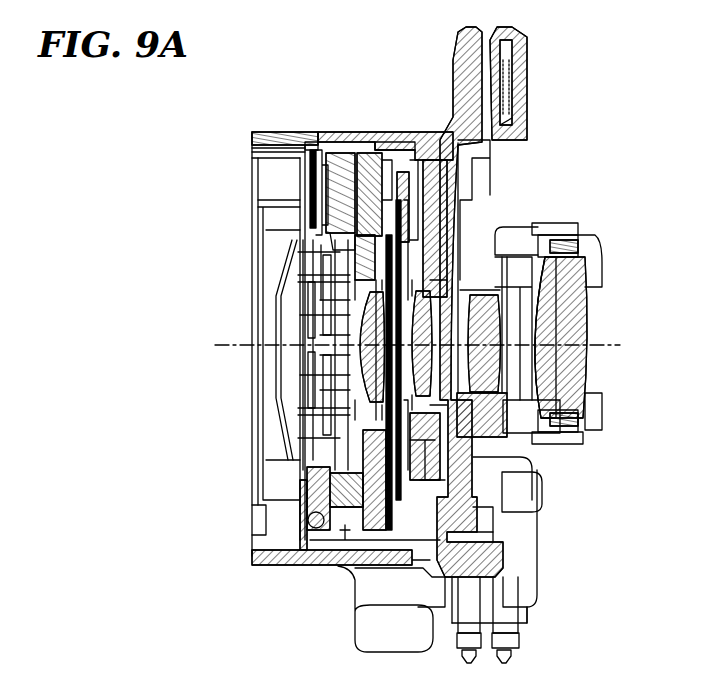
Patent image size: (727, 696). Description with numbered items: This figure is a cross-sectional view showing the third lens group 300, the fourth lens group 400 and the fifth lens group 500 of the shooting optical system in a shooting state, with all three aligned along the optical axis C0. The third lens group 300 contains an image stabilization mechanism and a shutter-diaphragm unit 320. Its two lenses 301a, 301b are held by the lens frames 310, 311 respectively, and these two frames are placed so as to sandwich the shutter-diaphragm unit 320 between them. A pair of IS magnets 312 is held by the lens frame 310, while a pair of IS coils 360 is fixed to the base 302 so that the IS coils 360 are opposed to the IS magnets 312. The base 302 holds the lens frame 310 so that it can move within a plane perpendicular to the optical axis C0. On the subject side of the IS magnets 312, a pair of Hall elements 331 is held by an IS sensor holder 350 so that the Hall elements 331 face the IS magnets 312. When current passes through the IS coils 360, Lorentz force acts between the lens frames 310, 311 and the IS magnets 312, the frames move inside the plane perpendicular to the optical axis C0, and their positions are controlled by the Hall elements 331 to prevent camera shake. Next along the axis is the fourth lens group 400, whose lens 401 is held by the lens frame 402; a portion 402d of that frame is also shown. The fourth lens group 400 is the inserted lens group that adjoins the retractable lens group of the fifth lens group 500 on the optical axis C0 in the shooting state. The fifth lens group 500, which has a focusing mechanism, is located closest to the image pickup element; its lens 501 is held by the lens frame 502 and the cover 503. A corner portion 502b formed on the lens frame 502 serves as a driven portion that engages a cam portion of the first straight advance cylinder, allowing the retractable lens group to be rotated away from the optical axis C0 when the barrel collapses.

The third lens group 300 is at (278, 572).
The group-3 base 302 is at (306, 560).
The IS sensor holder 350 is at (258, 186).
The Hall elements 331 is at (312, 150).
The IS magnets 312 is at (345, 158).
The IS coils 360 is at (370, 160).
The shutter-diaphragm unit 320 is at (402, 185).
The group-3 lens frame 310 is at (362, 286).
The group-3 lens 301a is at (364, 372).
The group-3 lens 301b is at (537, 370).
The optical axis C0 is at (220, 345).
The group-3 lens frame 311 is at (430, 448).
The fourth lens group 400 is at (487, 288).
The group-4 lens 401 is at (488, 326).
The group-4 lens frame 402 is at (467, 526).
The post 402d is at (510, 143).
The fifth lens group 500 is at (592, 249).
The group-5 lens 501 is at (567, 297).
The group-5 lens frame 502 is at (577, 236).
The corner portion 502b is at (502, 238).
The group-5 cover 503 is at (540, 242).